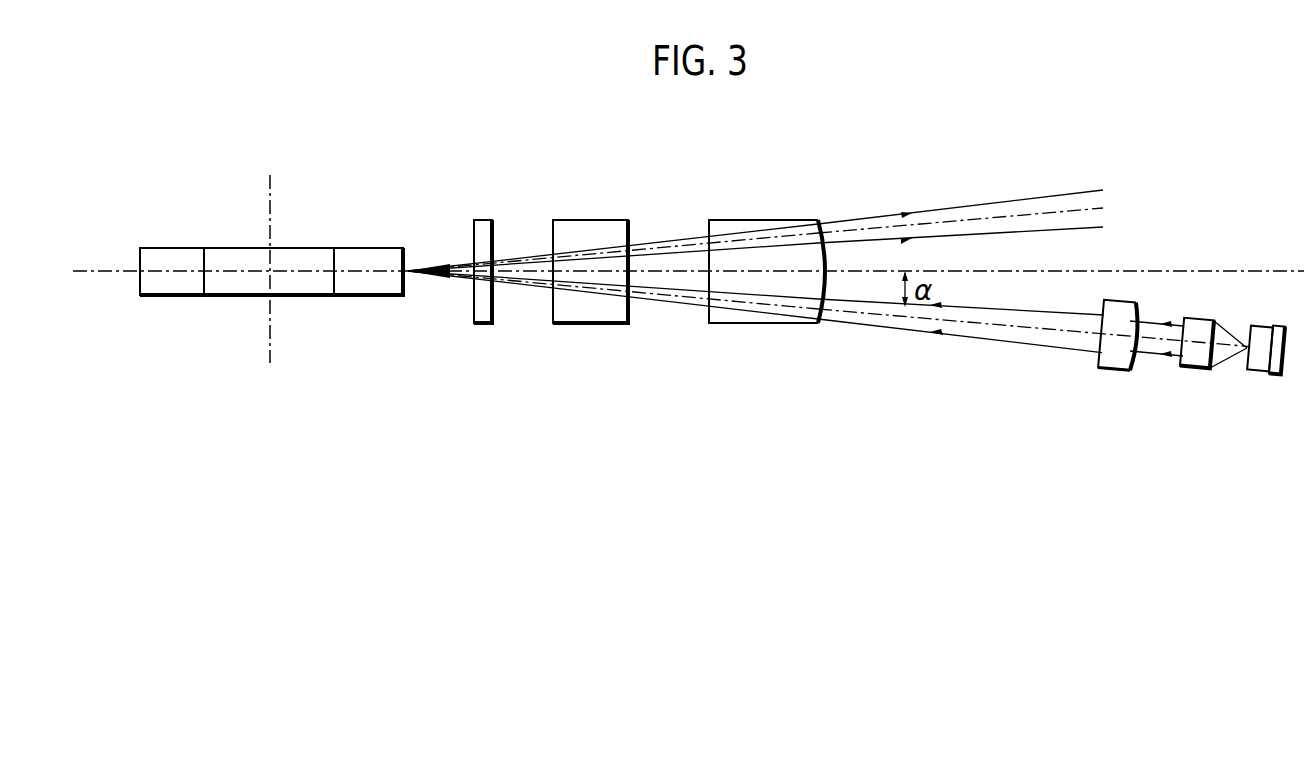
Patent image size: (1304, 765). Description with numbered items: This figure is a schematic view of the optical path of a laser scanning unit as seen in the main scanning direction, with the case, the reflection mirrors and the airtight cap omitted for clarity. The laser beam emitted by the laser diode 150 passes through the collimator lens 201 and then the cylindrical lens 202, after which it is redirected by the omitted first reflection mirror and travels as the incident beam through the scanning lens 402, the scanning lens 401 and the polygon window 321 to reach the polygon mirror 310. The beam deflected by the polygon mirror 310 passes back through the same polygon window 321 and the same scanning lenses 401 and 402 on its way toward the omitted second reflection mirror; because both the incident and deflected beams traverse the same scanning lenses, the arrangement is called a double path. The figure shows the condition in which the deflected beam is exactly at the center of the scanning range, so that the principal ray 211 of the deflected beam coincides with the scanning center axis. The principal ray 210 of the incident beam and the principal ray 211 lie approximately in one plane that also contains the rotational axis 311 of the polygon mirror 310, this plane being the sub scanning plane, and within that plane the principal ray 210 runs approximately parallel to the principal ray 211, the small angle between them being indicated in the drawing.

The rotational axis 311 is at (272, 183).
The polygon mirror 310 is at (293, 255).
The polygon window 321 is at (482, 227).
The scanning lens 401 is at (590, 227).
The scanning lens 402 is at (753, 225).
The principal ray of the deflected beam 211 is at (1005, 219).
The principal ray of the incident beam 210 is at (985, 325).
The cylindrical lens 202 is at (1117, 368).
The collimator lens 201 is at (1193, 355).
The laser diode 150 is at (1263, 362).